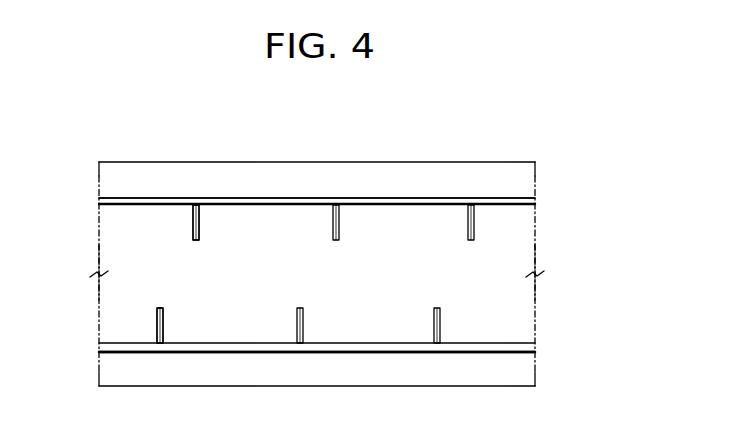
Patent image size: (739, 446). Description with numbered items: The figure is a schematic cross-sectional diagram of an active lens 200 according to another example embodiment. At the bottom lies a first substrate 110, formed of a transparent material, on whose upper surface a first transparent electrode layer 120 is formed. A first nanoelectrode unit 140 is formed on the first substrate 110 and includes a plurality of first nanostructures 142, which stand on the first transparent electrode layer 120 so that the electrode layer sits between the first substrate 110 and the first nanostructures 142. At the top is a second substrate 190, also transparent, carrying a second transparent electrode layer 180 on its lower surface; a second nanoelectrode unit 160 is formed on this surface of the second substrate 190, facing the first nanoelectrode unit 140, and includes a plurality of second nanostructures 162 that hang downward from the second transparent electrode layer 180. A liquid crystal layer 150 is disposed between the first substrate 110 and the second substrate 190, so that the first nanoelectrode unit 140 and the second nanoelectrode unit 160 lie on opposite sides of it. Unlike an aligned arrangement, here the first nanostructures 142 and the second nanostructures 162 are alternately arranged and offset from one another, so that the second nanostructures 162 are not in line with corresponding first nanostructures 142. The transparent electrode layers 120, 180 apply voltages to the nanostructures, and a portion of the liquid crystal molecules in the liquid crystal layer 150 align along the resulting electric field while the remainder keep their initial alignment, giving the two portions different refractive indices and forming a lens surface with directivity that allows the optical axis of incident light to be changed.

The active lens 200 is at (540, 142).
The second substrate 190 is at (535, 177).
The second transparent electrode layer 180 is at (535, 202).
The second nanoelectrode unit 160 is at (482, 227).
The second nanostructures 162 is at (193, 223).
The liquid crystal layer 150 is at (535, 257).
The first nanoelectrode unit 140 is at (448, 328).
The first nanostructures 142 is at (157, 327).
The first transparent electrode layer 120 is at (535, 349).
The first substrate 110 is at (535, 369).